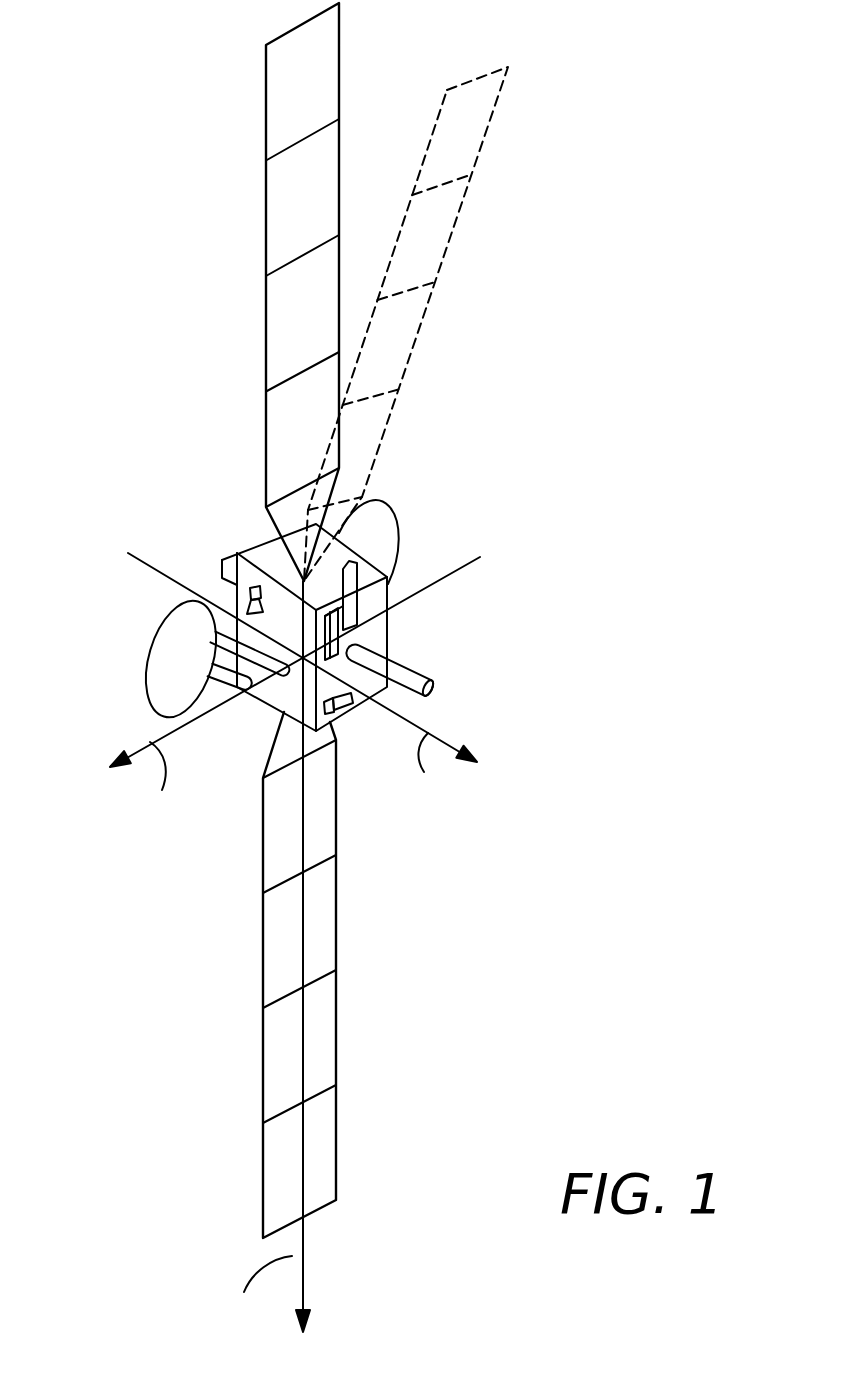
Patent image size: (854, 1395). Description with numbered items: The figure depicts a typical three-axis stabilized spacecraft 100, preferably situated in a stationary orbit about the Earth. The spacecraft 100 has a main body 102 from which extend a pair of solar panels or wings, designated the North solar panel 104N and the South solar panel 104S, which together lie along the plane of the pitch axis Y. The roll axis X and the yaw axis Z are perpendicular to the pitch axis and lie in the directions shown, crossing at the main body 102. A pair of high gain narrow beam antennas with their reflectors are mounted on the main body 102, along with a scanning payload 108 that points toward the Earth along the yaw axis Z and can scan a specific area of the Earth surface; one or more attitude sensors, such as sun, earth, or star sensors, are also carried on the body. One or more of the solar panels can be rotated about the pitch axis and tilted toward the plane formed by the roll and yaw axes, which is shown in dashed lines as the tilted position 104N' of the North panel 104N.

The spacecraft 100 is at (556, 265).
The main body 102 is at (377, 631).
The North solar panel 104N is at (349, 292).
The tilted position of North solar panel 104N' is at (446, 294).
The South solar panel 104S is at (327, 1022).
The scanning payload 108 is at (413, 675).